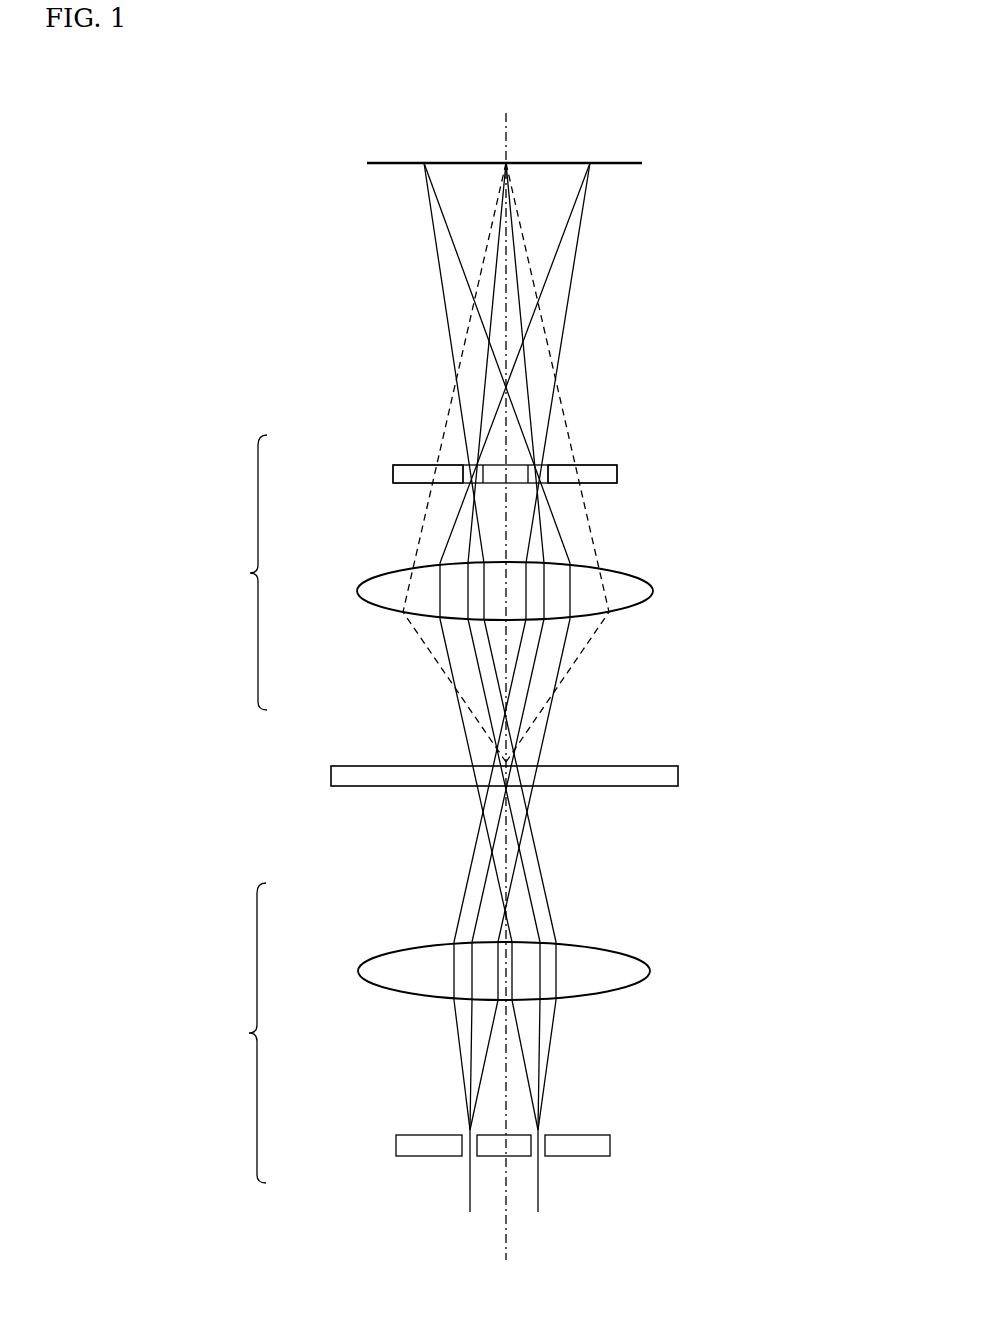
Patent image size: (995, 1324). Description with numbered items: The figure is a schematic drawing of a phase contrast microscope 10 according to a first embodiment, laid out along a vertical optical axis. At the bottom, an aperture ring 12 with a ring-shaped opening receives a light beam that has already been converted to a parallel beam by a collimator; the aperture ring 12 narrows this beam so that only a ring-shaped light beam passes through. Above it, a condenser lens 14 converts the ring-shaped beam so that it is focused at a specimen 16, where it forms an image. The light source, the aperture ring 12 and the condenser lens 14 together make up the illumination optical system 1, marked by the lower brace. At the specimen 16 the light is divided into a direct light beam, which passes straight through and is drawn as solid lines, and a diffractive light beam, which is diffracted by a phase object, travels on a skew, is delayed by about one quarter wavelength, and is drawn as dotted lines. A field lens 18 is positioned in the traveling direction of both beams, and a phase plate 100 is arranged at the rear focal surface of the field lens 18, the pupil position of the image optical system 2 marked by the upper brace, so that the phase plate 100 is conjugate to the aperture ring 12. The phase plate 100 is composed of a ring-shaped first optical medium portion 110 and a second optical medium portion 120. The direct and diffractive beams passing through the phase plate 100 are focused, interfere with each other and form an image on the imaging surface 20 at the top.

The illumination optical system 1 is at (251, 1033).
The image optical system 2 is at (252, 573).
The phase contrast microscope 10 is at (793, 270).
The aperture ring 12 is at (596, 1145).
The condenser lens 14 is at (630, 970).
The specimen 16 is at (665, 778).
The field lens 18 is at (638, 597).
The imaging surface 20 is at (612, 162).
The phase plate 100 is at (617, 472).
The first optical medium portion 110 is at (454, 507).
The second optical medium portion 120 is at (417, 472).